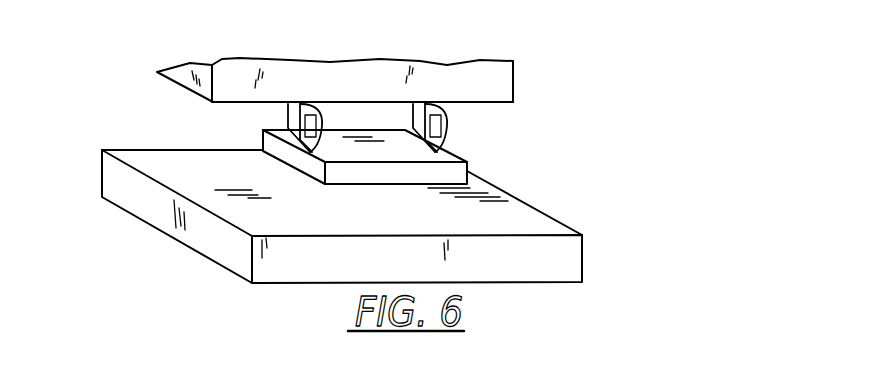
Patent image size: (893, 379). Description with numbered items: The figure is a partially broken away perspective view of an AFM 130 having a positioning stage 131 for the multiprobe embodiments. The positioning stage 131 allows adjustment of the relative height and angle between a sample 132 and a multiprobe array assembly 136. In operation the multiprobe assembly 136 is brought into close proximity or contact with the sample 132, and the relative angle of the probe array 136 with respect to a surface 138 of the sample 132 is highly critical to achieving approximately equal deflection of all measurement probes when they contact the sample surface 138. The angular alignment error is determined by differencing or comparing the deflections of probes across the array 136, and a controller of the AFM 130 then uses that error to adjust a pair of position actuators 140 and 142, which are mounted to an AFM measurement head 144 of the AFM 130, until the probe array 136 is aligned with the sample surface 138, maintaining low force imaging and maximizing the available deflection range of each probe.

The AFM 130 is at (489, 62).
The positioning stage 131 is at (191, 131).
The sample 132 is at (572, 254).
The multiprobe array assembly 136 is at (467, 165).
The surface 138 is at (478, 193).
The position actuator 140 is at (288, 119).
The position actuator 142 is at (445, 127).
The AFM measurement head 144 is at (507, 80).